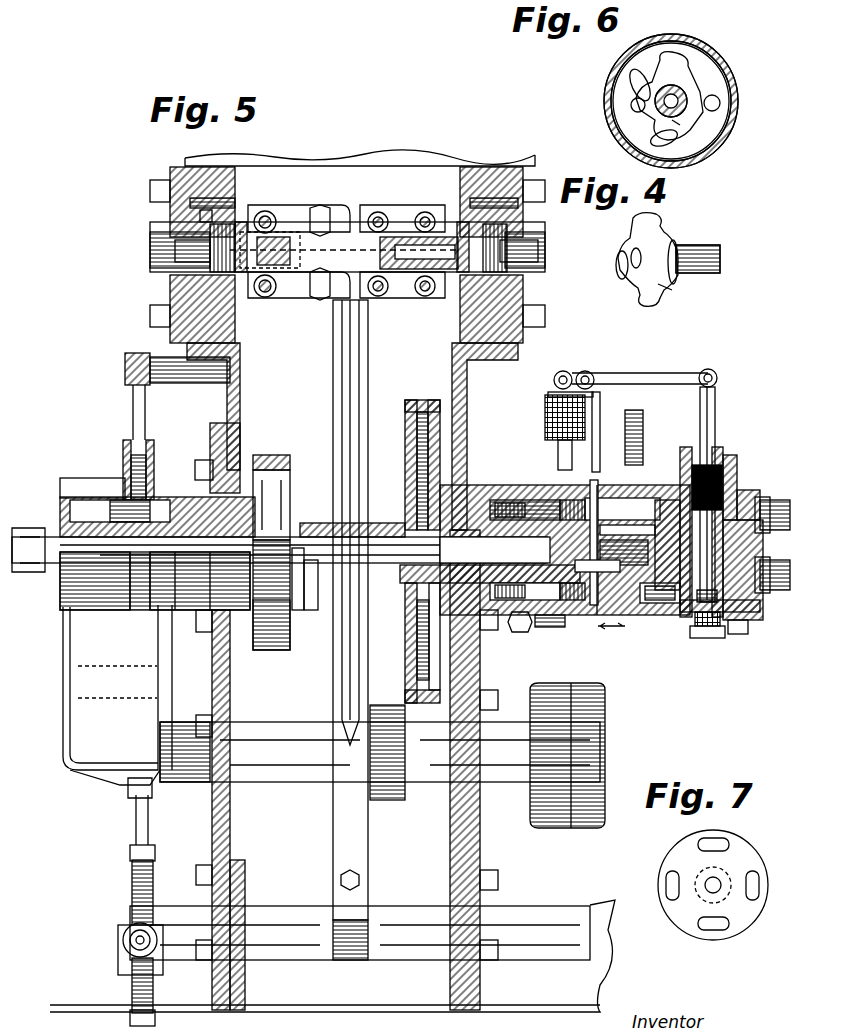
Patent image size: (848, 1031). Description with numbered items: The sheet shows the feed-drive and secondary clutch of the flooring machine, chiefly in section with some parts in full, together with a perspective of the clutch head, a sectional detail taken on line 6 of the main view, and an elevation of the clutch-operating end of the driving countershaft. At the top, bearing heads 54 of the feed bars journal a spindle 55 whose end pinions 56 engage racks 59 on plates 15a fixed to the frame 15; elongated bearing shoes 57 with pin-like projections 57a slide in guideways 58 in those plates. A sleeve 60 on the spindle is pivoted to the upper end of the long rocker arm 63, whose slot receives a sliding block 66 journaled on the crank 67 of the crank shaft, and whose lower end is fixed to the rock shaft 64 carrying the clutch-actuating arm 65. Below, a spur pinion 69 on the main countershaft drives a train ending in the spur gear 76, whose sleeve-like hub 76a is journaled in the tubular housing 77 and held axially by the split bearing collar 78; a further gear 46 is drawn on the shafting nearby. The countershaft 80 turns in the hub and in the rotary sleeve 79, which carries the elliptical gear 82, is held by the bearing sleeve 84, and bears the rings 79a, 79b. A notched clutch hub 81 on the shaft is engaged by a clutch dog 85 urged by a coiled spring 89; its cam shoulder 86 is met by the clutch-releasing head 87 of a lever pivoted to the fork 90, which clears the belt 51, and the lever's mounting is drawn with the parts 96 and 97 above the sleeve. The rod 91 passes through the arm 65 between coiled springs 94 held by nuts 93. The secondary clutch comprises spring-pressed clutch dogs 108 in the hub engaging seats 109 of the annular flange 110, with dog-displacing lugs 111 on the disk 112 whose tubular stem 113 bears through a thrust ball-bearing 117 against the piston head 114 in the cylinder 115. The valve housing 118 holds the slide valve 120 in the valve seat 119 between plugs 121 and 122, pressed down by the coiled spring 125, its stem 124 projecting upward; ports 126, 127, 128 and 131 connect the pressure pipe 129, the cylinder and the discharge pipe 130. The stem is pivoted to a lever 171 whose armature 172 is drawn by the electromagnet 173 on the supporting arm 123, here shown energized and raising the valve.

In FIG. 5, the section line 6 is at (597, 495).
In FIG. 5, the frame 15 is at (240, 912).
In FIG. 5, the plates 15a is at (180, 236).
In FIG. 5, the gear 46 is at (605, 765).
In FIG. 5, the belt 51 is at (140, 668).
In FIG. 5, the bearing heads 54 is at (275, 218).
In FIG. 5, the spindle 55 is at (395, 292).
In FIG. 5, the spur pinions 56 is at (222, 272).
In FIG. 5, the bearing shoes 57 is at (165, 250).
In FIG. 5, the pin-like projections 57a is at (440, 235).
In FIG. 5, the guideways 58 is at (190, 262).
In FIG. 5, the racks 59 is at (240, 226).
In FIG. 5, the sleeve 60 is at (340, 235).
In FIG. 5, the rocker arm 63 is at (345, 330).
In FIG. 5, the rock shaft 64 is at (118, 945).
In FIG. 5, the clutch-actuating arm 65 is at (125, 935).
In FIG. 5, the sliding block 66 is at (312, 612).
In FIG. 5, the crank 67 is at (298, 598).
In FIG. 5, the spur pinion 69 is at (388, 800).
In FIG. 5, the spur gear 76 is at (410, 685).
In FIG. 5, the sleeve-like hub 76a is at (550, 628).
In FIG. 5, the tubular housing 77 is at (600, 500).
In FIG. 6, the tubular housing 77 is at (610, 92).
In FIG. 5, the bearing collar 78 is at (520, 635).
In FIG. 5, the rotary sleeve 79 is at (265, 460).
In FIG. 5, the ring 79a is at (110, 612).
In FIG. 5, the ring 79b is at (158, 612).
In FIG. 5, the countershaft 80 is at (300, 540).
In FIG. 7, the countershaft 80 is at (724, 872).
In FIG. 5, the clutch hub 81 is at (30, 528).
In FIG. 5, the elliptical gear 82 is at (275, 652).
In FIG. 5, the bearing sleeve 84 is at (208, 455).
In FIG. 5, the clutch dog 85 is at (98, 485).
In FIG. 5, the cam shoulder 86 is at (112, 505).
In FIG. 5, the clutch-releasing head 87 is at (152, 480).
In FIG. 5, the coiled spring 89 is at (185, 510).
In FIG. 5, the fork 90 is at (70, 740).
In FIG. 5, the rod 91 is at (135, 820).
In FIG. 5, the nuts 93 is at (130, 852).
In FIG. 5, the coiled springs 94 is at (153, 905).
In FIG. 5, the pipe 96 is at (140, 430).
In FIG. 5, the cap 97 is at (128, 360).
In FIG. 5, the clutch dogs 108 is at (535, 505).
In FIG. 6, the clutch dogs 108 is at (720, 103).
In FIG. 5, the seats 109 is at (585, 505).
In FIG. 6, the seats 109 is at (632, 82).
In FIG. 7, the seats 109 is at (696, 924).
In FIG. 5, the annular flange 110 is at (598, 440).
In FIG. 6, the annular flange 110 is at (700, 65).
In FIG. 7, the annular flange 110 is at (660, 856).
In FIG. 5, the dog-displacing lugs 111 is at (572, 500).
In FIG. 6, the dog-displacing lugs 111 is at (652, 138).
In FIG. 4, the dog-displacing lugs 111 is at (664, 218).
In FIG. 5, the disk 112 is at (625, 565).
In FIG. 6, the disk 112 is at (680, 128).
In FIG. 4, the disk 112 is at (662, 284).
In FIG. 5, the tubular stem 113 is at (640, 600).
In FIG. 6, the tubular stem 113 is at (686, 106).
In FIG. 4, the tubular stem 113 is at (710, 255).
In FIG. 5, the piston head 114 is at (630, 525).
In FIG. 5, the cylinder 115 is at (665, 605).
In FIG. 5, the thrust ball-bearing 117 is at (665, 500).
In FIG. 5, the valve housing 118 is at (745, 480).
In FIG. 5, the valve seat 119 is at (722, 632).
In FIG. 5, the slide valve 120 is at (708, 630).
In FIG. 5, the plug 121 is at (707, 640).
In FIG. 5, the plug 122 is at (720, 460).
In FIG. 5, the supporting arm 123 is at (640, 430).
In FIG. 5, the valve stem 124 is at (715, 385).
In FIG. 5, the coiled spring 125 is at (735, 462).
In FIG. 5, the port 126 is at (755, 492).
In FIG. 5, the port 127 is at (735, 612).
In FIG. 5, the port 128 is at (720, 618).
In FIG. 5, the pressure pipe 129 is at (788, 505).
In FIG. 5, the discharge pipe 130 is at (788, 590).
In FIG. 5, the port 131 is at (745, 634).
In FIG. 5, the lever 171 is at (625, 375).
In FIG. 5, the armature 172 is at (555, 378).
In FIG. 5, the electromagnet 173 is at (548, 420).